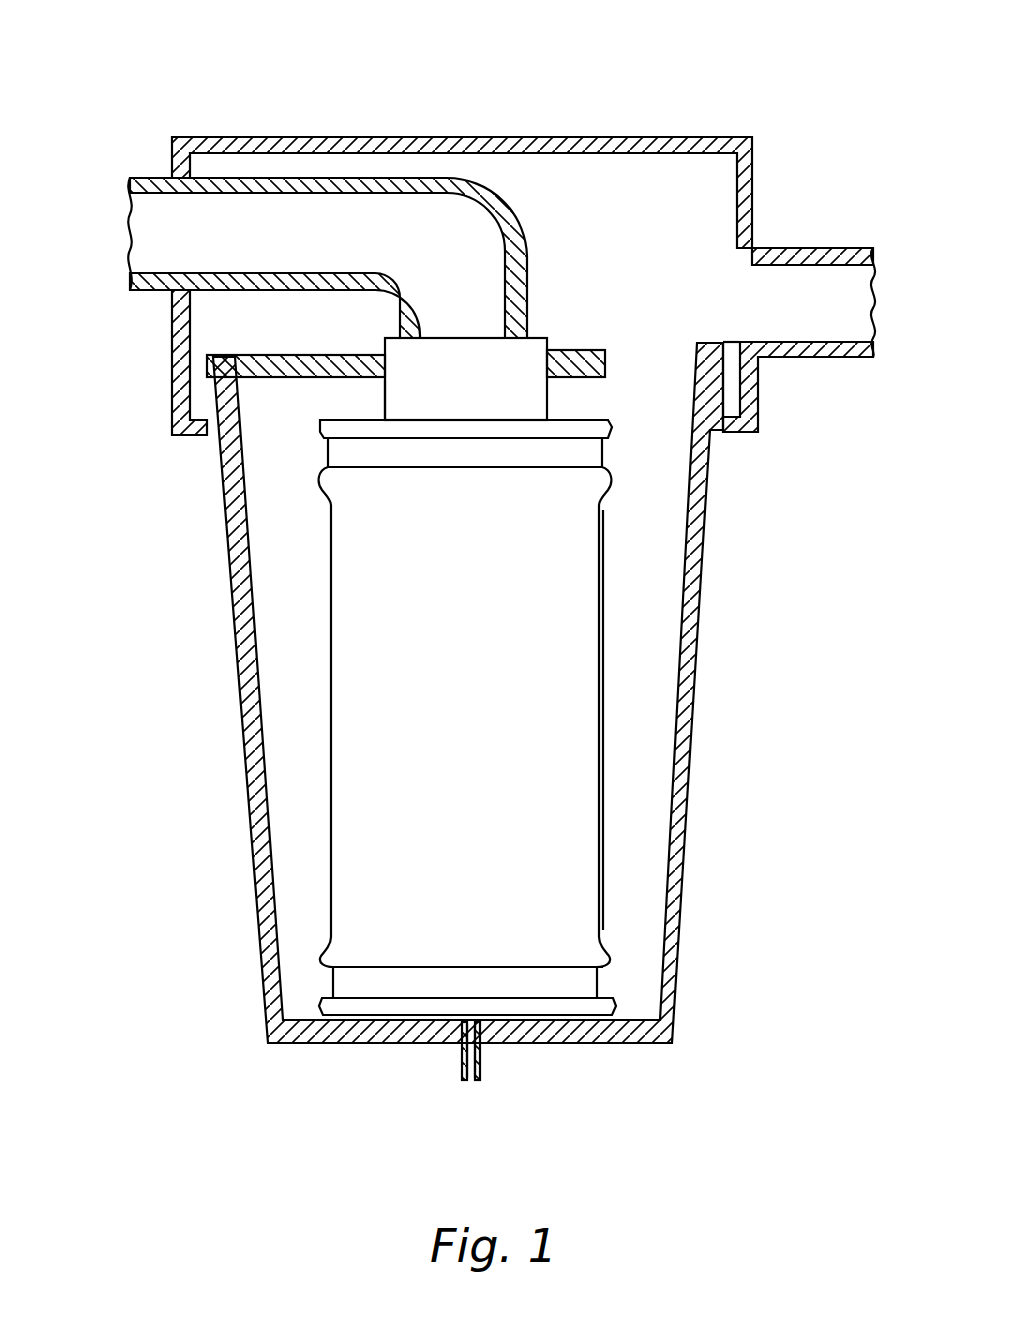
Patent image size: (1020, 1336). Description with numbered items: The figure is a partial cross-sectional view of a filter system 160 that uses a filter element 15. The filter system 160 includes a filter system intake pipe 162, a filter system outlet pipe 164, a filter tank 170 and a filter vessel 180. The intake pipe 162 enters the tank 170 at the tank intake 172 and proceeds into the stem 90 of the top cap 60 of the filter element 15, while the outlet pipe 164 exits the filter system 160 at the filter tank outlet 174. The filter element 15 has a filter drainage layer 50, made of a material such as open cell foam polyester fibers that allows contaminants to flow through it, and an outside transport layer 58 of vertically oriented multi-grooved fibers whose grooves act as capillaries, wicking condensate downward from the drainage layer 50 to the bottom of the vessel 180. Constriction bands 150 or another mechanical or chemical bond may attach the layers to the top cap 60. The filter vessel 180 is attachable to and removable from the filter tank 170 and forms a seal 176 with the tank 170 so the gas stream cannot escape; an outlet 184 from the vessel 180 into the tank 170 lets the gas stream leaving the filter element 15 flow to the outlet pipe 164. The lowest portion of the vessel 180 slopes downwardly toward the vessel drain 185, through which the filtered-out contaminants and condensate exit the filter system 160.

The filter system 160 is at (212, 106).
The filter tank 170 is at (727, 191).
The tank intake 172 is at (175, 198).
The filter system intake pipe 162 is at (154, 290).
The filter system outlet pipe 164 is at (822, 248).
The filter tank outlet 174 is at (750, 342).
The outlet 184 is at (752, 368).
The seal 176 is at (300, 360).
The top cap stem 90 is at (385, 392).
The top cap 60 is at (548, 414).
The filter element 15 is at (630, 564).
The constriction bands 150 is at (328, 452).
The filter drainage layer 50 is at (585, 817).
The transport layer 58 is at (606, 866).
The filter vessel 180 is at (702, 607).
The vessel drain 185 is at (482, 1062).